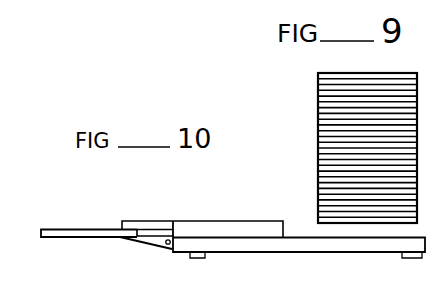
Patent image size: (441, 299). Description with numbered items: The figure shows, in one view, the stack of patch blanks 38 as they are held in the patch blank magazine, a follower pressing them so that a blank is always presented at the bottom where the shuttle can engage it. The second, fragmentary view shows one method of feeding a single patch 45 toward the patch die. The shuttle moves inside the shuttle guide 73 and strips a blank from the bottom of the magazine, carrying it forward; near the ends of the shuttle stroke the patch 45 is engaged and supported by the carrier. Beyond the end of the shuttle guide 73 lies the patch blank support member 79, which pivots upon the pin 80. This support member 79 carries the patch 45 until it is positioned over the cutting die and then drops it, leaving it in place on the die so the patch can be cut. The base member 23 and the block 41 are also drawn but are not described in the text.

In FIG. 9, the patch blanks 38 is at (328, 90).
In FIG. 10, the base plate 23 is at (233, 247).
In FIG. 10, the shuttle guide 73 is at (198, 224).
In FIG. 10, the clamp block 41 is at (137, 226).
In FIG. 10, the patch 45 is at (73, 228).
In FIG. 10, the patch blank support member 79 is at (154, 243).
In FIG. 10, the pin 80 is at (168, 245).